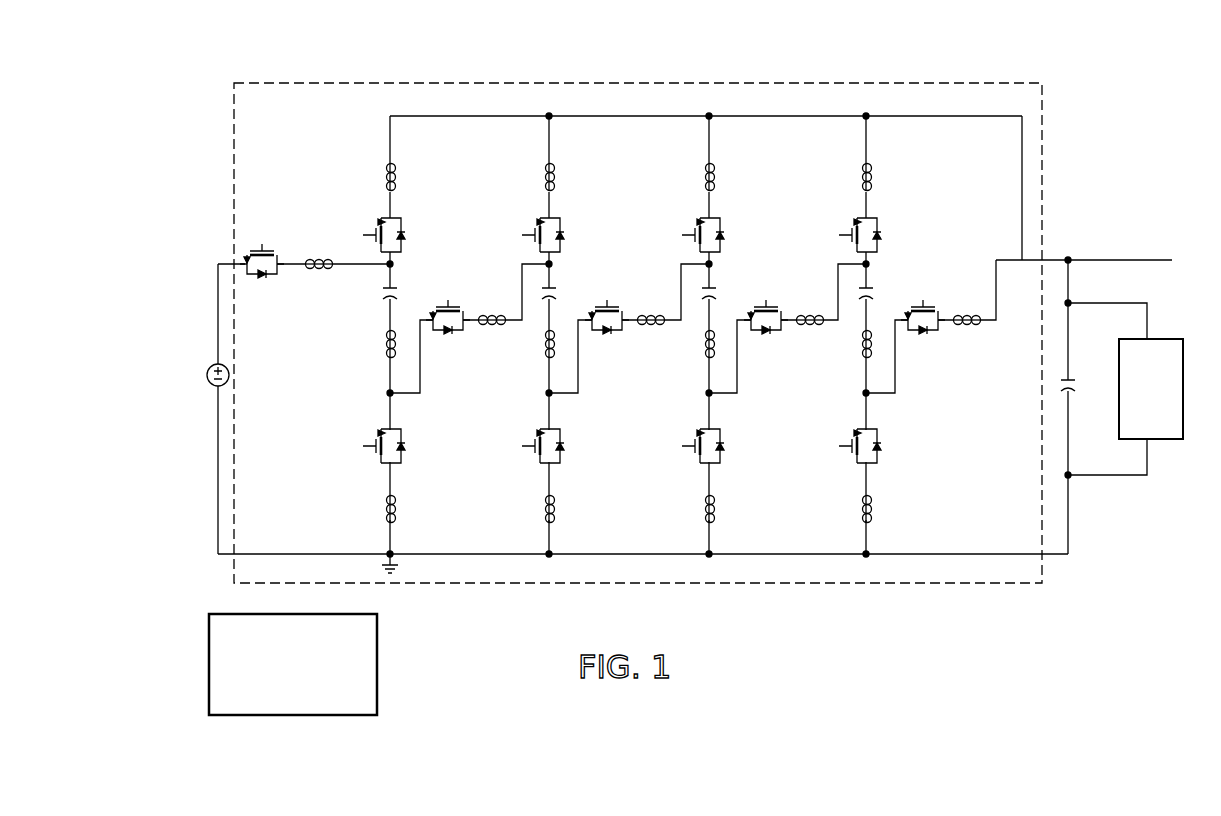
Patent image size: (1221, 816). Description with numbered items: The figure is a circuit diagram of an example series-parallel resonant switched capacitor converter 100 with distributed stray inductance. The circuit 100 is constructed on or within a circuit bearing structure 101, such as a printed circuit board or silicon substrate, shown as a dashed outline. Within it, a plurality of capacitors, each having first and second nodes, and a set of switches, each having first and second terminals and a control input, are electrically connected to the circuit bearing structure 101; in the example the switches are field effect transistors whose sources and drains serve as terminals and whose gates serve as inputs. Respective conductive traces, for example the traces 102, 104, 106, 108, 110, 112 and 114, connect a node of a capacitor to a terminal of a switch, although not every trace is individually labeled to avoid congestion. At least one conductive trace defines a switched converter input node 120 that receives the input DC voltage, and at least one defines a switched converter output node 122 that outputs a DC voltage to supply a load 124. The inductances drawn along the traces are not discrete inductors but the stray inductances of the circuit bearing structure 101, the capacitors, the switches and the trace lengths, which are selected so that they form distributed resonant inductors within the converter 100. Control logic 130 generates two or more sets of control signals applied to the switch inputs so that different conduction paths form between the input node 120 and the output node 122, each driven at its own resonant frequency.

The series-parallel resonant switched capacitor converter 100 is at (277, 70).
The circuit bearing structure 101 is at (701, 584).
The conductive trace 102 is at (388, 207).
The conductive trace 104 is at (388, 418).
The conductive trace 106 is at (419, 352).
The conductive trace 108 is at (463, 556).
The conductive trace 110 is at (432, 116).
The conductive trace 112 is at (551, 116).
The conductive trace 114 is at (631, 116).
The switched converter input node 120 is at (218, 264).
The switched converter output node 122 is at (1068, 260).
The load 124 is at (1165, 411).
The control logic 130 is at (276, 704).